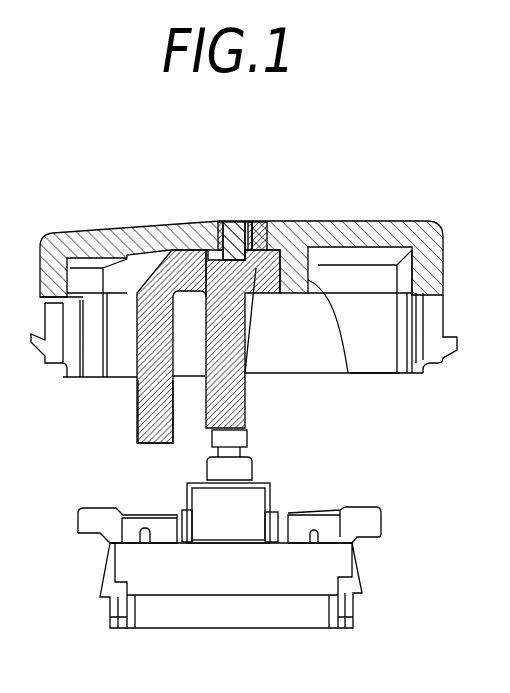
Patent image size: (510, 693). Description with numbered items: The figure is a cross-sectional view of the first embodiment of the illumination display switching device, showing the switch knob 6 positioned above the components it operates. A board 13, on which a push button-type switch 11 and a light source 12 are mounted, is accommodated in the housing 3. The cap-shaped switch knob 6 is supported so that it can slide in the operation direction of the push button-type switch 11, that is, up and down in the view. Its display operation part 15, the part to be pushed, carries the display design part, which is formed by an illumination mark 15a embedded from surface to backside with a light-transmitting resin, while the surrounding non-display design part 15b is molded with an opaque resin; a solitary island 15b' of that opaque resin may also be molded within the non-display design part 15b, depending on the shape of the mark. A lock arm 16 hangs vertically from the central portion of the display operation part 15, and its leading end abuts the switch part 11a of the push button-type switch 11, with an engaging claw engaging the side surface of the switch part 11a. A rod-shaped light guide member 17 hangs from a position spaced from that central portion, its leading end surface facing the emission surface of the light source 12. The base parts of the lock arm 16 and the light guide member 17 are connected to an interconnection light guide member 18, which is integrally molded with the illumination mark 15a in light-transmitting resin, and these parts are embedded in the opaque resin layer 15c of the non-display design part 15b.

The housing 3 is at (363, 587).
The left switch knob 6 is at (410, 215).
The push button-type switch 11 is at (253, 467).
The switch part 11a is at (247, 437).
The light source 12 is at (145, 541).
The board 13 is at (283, 543).
The display operation part 15 is at (357, 222).
The illumination mark 15a is at (217, 222).
The non-display design part 15b is at (113, 222).
The solitary island 15b' is at (219, 199).
The opaque resin layer 15c is at (353, 375).
The lock arm 16 is at (243, 373).
The light guide member 17 is at (138, 412).
The interconnection light guide member 18 is at (160, 223).